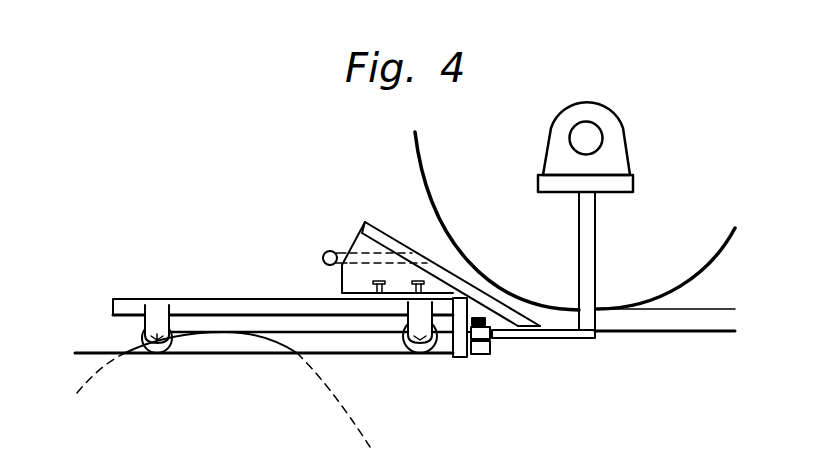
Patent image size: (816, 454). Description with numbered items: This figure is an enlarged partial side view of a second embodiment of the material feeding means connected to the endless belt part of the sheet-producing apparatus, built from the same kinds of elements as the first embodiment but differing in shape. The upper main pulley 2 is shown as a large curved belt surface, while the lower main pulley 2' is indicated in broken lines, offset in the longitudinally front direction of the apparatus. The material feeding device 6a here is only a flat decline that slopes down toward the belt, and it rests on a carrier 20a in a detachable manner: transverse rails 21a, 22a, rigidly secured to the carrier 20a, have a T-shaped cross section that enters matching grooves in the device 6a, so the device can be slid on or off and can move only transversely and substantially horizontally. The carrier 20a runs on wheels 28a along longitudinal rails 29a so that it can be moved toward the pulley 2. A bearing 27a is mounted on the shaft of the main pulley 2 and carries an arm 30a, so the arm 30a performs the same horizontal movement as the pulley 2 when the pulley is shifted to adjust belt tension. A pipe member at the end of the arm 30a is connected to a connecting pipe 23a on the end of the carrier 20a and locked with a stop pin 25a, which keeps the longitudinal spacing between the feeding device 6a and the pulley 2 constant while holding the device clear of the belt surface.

The upper main pulley 2 is at (556, 231).
The lower main pulley 2' is at (238, 400).
The material feeding device 6a is at (377, 228).
The carrier 20a is at (204, 298).
The transverse rail 21a is at (376, 282).
The transverse rail 22a is at (353, 245).
The connecting pipe 23a is at (505, 362).
The stop pin 25a is at (515, 338).
The bearing 27a is at (629, 158).
The wheel 28a is at (167, 355).
The rail 29a is at (247, 345).
The arm 30a is at (565, 338).